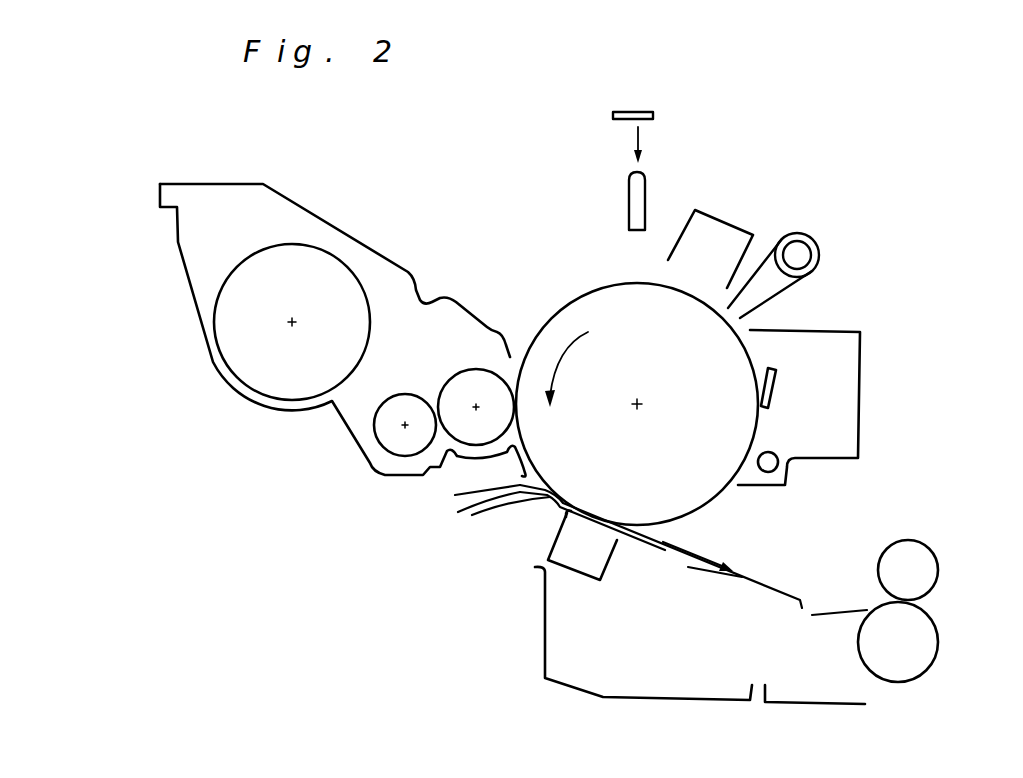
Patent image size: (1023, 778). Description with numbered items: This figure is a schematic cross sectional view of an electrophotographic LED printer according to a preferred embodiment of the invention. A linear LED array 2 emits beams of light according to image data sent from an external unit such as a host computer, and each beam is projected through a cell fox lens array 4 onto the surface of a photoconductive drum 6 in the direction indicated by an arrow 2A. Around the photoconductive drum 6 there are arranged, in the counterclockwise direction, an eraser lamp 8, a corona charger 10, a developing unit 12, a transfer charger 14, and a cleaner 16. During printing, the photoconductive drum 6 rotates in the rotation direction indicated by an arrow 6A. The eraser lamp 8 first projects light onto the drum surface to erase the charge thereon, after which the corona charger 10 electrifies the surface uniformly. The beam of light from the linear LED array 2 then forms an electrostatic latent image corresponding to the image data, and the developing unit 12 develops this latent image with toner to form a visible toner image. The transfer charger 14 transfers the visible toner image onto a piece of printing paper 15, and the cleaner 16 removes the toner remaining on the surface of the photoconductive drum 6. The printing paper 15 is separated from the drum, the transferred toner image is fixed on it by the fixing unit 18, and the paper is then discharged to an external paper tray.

The linear LED array 2 is at (633, 110).
The arrow 2A is at (665, 141).
The cell fox lens array 4 is at (647, 192).
The photoconductive drum 6 is at (578, 293).
The arrow 6A is at (568, 358).
The eraser lamp 8 is at (813, 235).
The corona charger 10 is at (733, 220).
The developing unit 12 is at (353, 232).
The transfer charger 14 is at (548, 547).
The printing paper 15 is at (657, 543).
The cleaner 16 is at (860, 402).
The fixing unit 18 is at (938, 572).